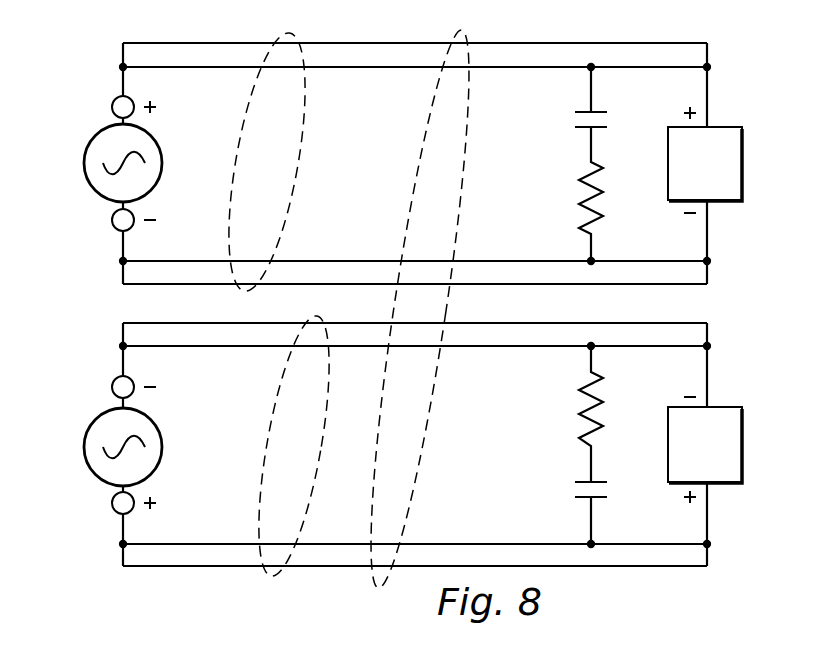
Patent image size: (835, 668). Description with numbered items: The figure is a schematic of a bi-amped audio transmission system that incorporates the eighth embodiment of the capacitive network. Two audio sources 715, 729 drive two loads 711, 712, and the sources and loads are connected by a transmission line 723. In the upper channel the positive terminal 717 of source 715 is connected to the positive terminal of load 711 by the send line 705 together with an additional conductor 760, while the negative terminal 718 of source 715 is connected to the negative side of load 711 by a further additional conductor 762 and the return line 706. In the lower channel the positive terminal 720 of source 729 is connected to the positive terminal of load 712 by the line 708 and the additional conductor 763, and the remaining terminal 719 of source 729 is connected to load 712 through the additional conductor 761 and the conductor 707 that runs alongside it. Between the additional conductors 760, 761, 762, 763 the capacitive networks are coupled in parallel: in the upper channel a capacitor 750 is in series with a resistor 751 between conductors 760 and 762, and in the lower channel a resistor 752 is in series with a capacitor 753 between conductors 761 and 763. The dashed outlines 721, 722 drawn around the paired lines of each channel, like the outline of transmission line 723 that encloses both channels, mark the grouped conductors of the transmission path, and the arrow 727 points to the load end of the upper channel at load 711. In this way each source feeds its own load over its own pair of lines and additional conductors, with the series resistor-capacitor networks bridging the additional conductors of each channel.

The send line 705 is at (523, 43).
The return line 706 is at (530, 285).
The third conductor 707 is at (250, 323).
The send line 708 is at (203, 567).
The load 711 is at (722, 202).
The load 712 is at (720, 484).
The source 715 is at (97, 196).
The positive terminal 717 is at (112, 106).
The negative terminal 718 is at (112, 228).
The negative terminal of second source 719 is at (112, 386).
The positive terminal 720 is at (112, 508).
The first coupling region 721 is at (255, 97).
The second coupling region 722 is at (279, 395).
The transmission line 723 is at (428, 100).
The output to load 727 is at (722, 97).
The source 729 is at (97, 482).
The capacitor 750 is at (598, 112).
The resistor 751 is at (580, 200).
The resistor 752 is at (580, 406).
The capacitor 753 is at (577, 485).
The additional conductor 760 is at (494, 68).
The additional conductor 761 is at (473, 347).
The additional conductor 762 is at (353, 260).
The additional conductor 763 is at (510, 543).